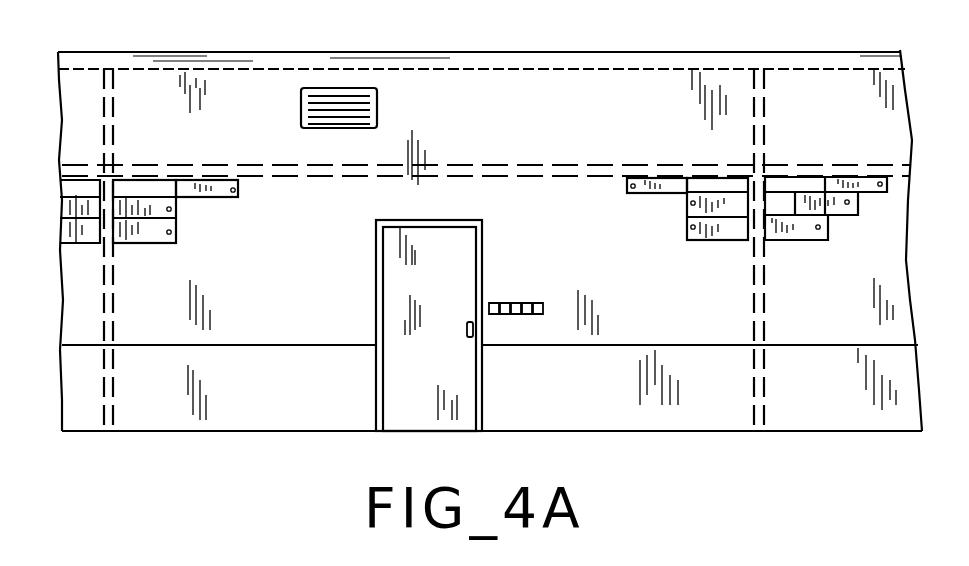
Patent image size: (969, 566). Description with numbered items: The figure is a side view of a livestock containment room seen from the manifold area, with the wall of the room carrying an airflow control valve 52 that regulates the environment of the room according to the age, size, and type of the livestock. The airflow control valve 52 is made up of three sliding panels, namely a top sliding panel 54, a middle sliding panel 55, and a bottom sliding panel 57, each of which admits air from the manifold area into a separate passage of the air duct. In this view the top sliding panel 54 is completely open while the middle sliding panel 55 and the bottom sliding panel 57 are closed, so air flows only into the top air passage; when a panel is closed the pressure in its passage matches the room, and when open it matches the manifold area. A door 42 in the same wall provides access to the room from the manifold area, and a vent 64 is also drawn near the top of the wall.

The door 42 is at (400, 266).
The airflow control valve 52 is at (178, 235).
The top sliding panel 54 is at (238, 190).
The middle sliding panel 55 is at (173, 210).
The bottom sliding panel 57 is at (157, 238).
The vent 64 is at (336, 90).